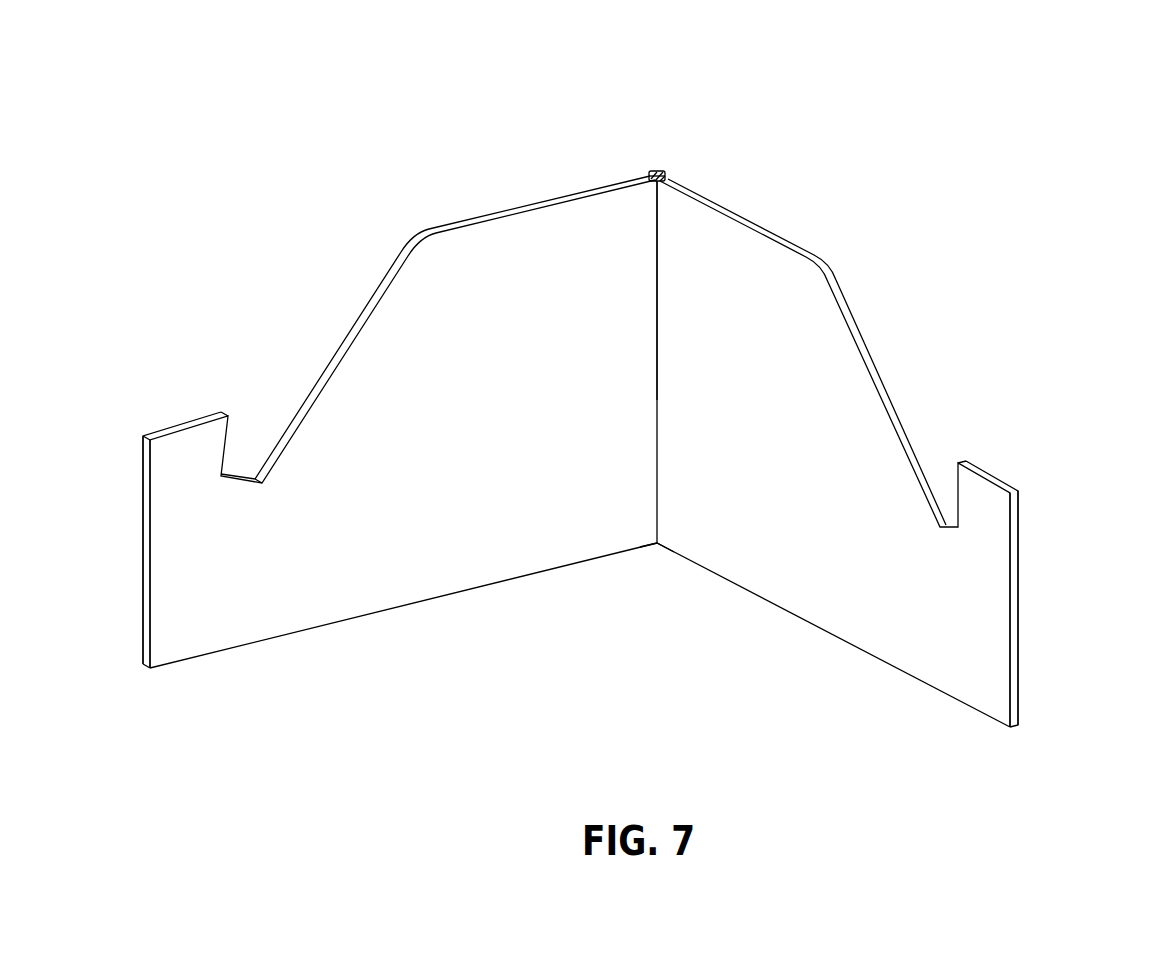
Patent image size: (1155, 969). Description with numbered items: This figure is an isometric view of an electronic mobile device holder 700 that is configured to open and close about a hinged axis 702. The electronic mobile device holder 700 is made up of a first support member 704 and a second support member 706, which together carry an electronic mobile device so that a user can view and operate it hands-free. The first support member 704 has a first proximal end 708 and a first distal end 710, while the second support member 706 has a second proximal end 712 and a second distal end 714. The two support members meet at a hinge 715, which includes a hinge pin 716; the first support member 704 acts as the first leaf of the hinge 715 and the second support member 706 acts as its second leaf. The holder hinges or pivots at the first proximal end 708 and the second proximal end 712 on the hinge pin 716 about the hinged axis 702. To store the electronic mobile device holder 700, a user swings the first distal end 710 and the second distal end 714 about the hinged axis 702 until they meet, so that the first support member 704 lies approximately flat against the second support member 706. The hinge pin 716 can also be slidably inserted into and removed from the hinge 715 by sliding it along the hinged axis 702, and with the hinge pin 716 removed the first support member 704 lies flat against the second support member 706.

The electronic mobile device holder 700 is at (848, 78).
The hinged axis 702 is at (657, 126).
The first support member 704 is at (297, 620).
The second support member 706 is at (873, 641).
The first proximal end 708 is at (635, 375).
The first distal end 710 is at (130, 600).
The second proximal end 712 is at (676, 277).
The second distal end 714 is at (1035, 652).
The hinge 715 is at (653, 575).
The hinge pin 716 is at (663, 170).